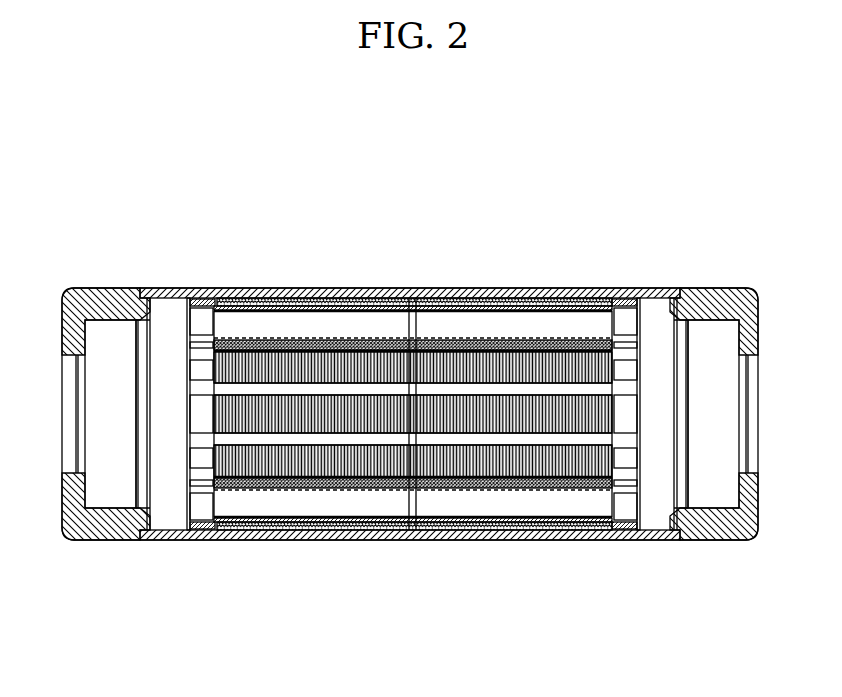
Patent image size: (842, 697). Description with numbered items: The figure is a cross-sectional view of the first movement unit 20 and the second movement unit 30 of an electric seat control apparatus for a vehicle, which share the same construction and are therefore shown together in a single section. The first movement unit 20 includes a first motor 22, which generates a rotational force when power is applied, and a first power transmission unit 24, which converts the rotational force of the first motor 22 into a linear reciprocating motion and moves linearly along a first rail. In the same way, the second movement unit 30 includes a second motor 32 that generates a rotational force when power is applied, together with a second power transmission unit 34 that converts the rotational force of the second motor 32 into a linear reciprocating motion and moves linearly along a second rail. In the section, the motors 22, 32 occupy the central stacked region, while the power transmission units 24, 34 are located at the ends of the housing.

The first movement unit 20 is at (410, 366).
The second movement unit 30 is at (640, 266).
The first motor 22 is at (413, 468).
The second motor 32 is at (555, 458).
The first power transmission unit 24 is at (410, 476).
The second power transmission unit 34 is at (115, 540).